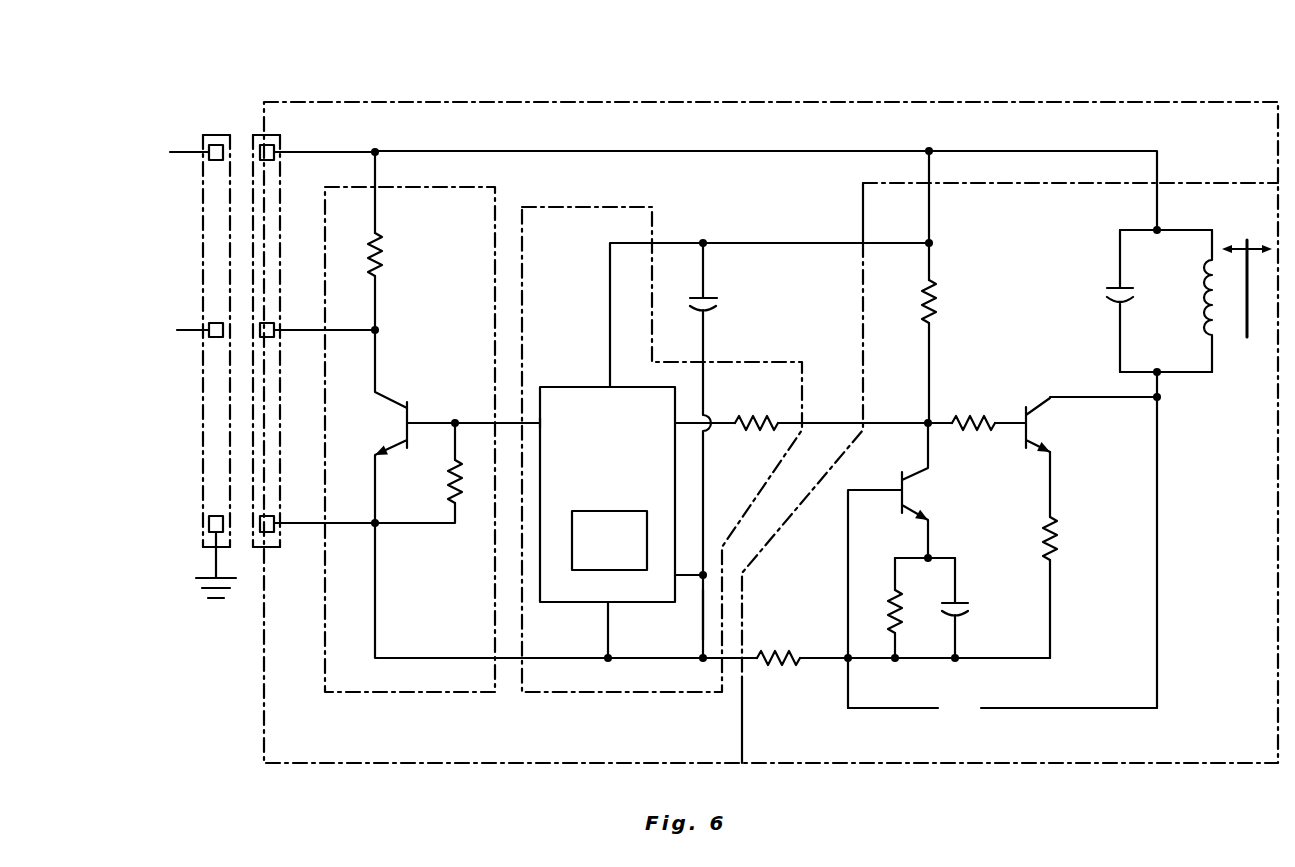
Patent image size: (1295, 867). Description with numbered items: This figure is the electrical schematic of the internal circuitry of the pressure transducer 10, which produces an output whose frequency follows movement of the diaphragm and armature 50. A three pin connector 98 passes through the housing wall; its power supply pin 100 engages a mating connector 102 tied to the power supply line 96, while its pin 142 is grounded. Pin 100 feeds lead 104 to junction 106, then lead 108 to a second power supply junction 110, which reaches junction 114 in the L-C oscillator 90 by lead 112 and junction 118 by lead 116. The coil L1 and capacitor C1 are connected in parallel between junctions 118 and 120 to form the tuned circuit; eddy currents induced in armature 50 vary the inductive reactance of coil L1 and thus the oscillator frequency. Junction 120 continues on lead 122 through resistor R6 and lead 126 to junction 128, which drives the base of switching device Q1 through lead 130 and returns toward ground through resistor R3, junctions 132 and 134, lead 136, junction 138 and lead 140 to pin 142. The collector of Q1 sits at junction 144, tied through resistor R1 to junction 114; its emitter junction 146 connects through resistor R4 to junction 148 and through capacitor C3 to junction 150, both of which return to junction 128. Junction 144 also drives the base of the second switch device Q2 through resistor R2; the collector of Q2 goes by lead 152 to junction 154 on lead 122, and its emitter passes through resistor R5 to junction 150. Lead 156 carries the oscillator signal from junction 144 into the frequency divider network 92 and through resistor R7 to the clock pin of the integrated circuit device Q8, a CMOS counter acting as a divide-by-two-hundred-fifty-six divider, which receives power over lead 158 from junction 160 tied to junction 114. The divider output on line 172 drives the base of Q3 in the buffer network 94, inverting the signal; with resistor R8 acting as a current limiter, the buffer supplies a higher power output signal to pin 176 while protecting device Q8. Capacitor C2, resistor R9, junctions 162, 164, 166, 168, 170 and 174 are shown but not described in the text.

The transducer 10 is at (874, 98).
The diaphragm and armature 50 is at (1249, 338).
The L-C oscillator 90 is at (863, 192).
The frequency divider network 92 is at (577, 207).
The buffer network 94 is at (393, 693).
The power supply line 96 is at (190, 151).
The three pin connector 98 is at (262, 135).
The power supply pin 100 is at (276, 150).
The mating connector 102 is at (208, 135).
The lead 104 is at (340, 151).
The junction 106 is at (380, 150).
The lead 108 is at (568, 151).
The second power supply junction 110 is at (931, 149).
The lead 112 is at (931, 208).
The junction 114 is at (932, 243).
The lead 116 is at (1040, 150).
The junction 118 is at (1156, 228).
The junction 120 is at (1160, 374).
The lead 122 is at (1160, 548).
The lead 126 is at (851, 662).
The junction 128 is at (846, 656).
The lead 130 is at (846, 549).
The junction 132 is at (700, 656).
The junction 134 is at (610, 661).
The lead 136 is at (530, 660).
The junction 138 is at (378, 526).
The lead 140 is at (342, 525).
The pin 142 is at (276, 532).
The junction 144 is at (931, 428).
The junction 146 is at (931, 556).
The junction 148 is at (895, 661).
The junction 150 is at (955, 661).
The lead 152 is at (1090, 398).
The junction 154 is at (1160, 399).
The lead 156 is at (830, 421).
The lead 158 is at (608, 266).
The junction 160 is at (703, 240).
The conductor 162 is at (797, 242).
The node 164 is at (706, 577).
The conductor 166 is at (700, 606).
The input conductor 168 is at (532, 420).
The node 170 is at (457, 421).
The line 172 is at (430, 421).
The node 174 is at (378, 330).
The pin 176 is at (274, 328).
The switching device Q1 is at (927, 490).
The second switch device Q2 is at (1045, 425).
The switching transistor Q3 is at (384, 426).
The integrated circuit device Q8 is at (613, 495).
The resistor R1 is at (942, 333).
The resistor R2 is at (977, 411).
The resistor R3 is at (775, 646).
The resistor R4 is at (882, 608).
The resistor R5 is at (1067, 555).
The resistor R6 is at (945, 712).
The resistor R7 is at (801, 411).
The resistor R8 is at (380, 268).
The resistor R9 is at (450, 476).
The capacitor C1 is at (1106, 290).
The capacitor C2 is at (718, 303).
The capacitor C3 is at (968, 610).
The coil L1 is at (1200, 292).